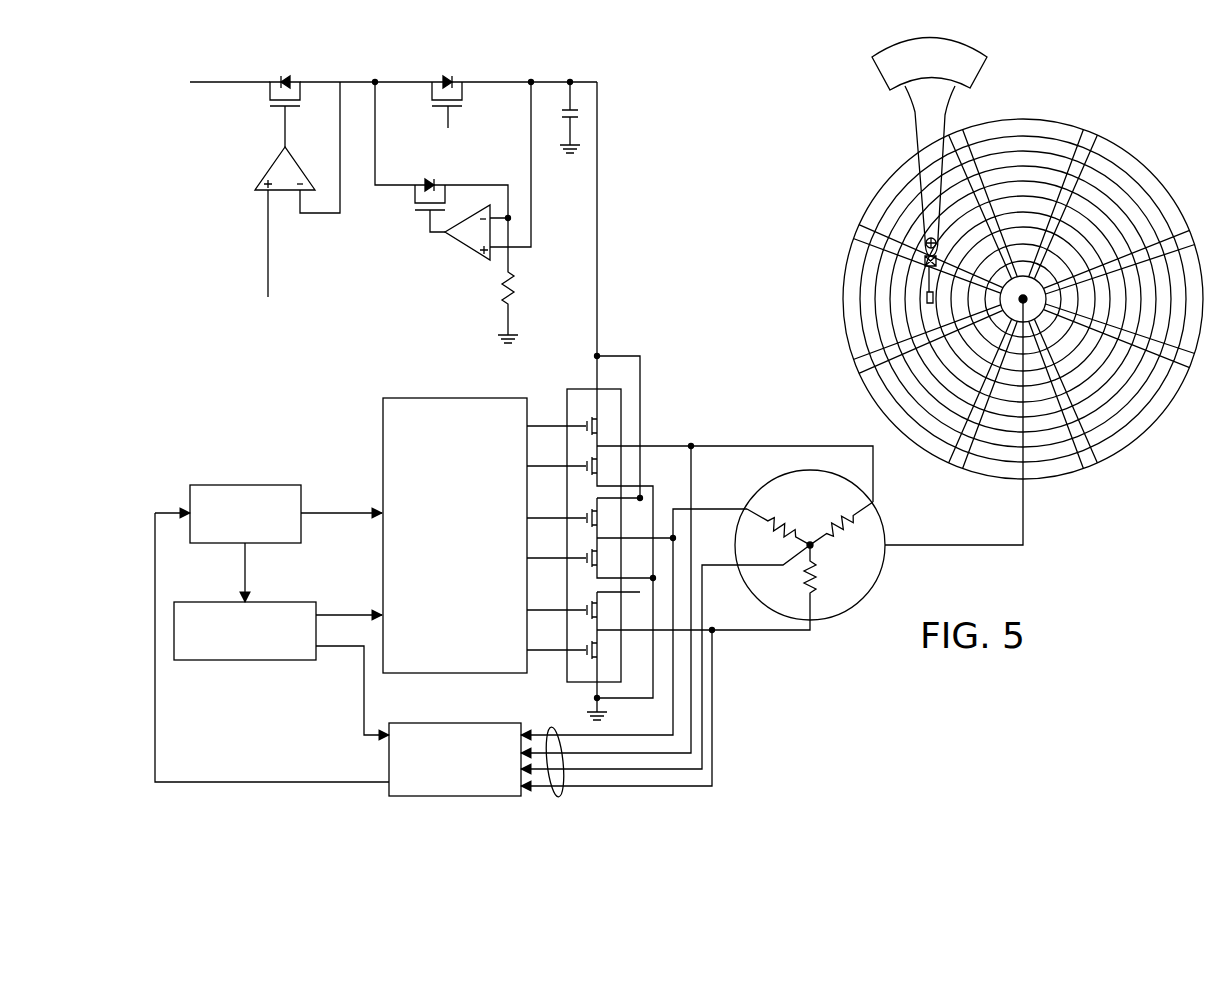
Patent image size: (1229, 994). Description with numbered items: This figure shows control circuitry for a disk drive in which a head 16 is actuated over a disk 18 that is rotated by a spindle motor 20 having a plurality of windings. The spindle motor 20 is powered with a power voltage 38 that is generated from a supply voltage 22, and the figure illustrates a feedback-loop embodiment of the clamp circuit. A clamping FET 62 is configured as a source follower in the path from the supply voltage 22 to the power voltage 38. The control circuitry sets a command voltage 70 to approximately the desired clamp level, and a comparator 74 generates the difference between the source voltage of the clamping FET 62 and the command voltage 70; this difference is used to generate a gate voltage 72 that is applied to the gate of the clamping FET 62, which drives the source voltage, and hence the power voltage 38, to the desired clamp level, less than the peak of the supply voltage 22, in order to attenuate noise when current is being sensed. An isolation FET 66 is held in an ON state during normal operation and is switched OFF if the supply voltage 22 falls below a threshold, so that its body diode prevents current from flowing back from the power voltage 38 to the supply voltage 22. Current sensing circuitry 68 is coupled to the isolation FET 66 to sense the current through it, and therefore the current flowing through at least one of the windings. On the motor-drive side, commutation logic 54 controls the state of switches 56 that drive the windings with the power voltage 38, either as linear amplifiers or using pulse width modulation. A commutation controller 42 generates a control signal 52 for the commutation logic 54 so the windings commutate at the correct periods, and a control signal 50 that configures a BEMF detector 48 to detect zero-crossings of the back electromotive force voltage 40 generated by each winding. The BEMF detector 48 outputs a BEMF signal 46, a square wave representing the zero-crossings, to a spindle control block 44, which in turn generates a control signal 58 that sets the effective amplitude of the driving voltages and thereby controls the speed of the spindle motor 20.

The head 16 is at (925, 298).
The disk 18 is at (1145, 162).
The spindle motor 20 is at (880, 568).
The supply voltage 22 is at (219, 82).
The power voltage 38 is at (600, 140).
The back electromotive force (BEMF) voltage 40 is at (560, 797).
The commutation controller 42 is at (246, 660).
The spindle control block 44 is at (282, 545).
The BEMF signal 46 is at (275, 782).
The BEMF detector 48 is at (457, 723).
The control signal 50 is at (366, 690).
The control signal 52 is at (341, 615).
The commutation logic 54 is at (455, 398).
The switches 56 is at (581, 387).
The control signal 58 is at (334, 513).
The clamping FET 62 is at (298, 72).
The isolation FET (ISOFET) 66 is at (460, 71).
The current sensing circuitry 68 is at (405, 234).
The command voltage 70 is at (267, 242).
The gate voltage 72 is at (290, 128).
The comparator 74 is at (268, 172).